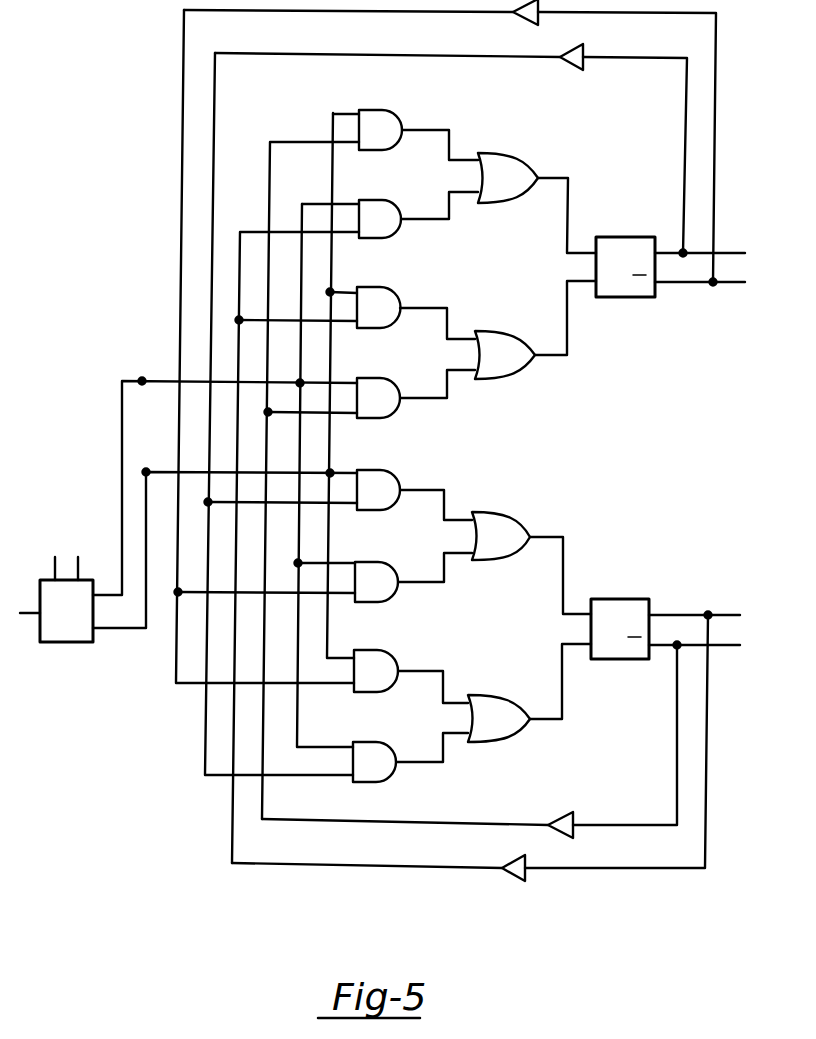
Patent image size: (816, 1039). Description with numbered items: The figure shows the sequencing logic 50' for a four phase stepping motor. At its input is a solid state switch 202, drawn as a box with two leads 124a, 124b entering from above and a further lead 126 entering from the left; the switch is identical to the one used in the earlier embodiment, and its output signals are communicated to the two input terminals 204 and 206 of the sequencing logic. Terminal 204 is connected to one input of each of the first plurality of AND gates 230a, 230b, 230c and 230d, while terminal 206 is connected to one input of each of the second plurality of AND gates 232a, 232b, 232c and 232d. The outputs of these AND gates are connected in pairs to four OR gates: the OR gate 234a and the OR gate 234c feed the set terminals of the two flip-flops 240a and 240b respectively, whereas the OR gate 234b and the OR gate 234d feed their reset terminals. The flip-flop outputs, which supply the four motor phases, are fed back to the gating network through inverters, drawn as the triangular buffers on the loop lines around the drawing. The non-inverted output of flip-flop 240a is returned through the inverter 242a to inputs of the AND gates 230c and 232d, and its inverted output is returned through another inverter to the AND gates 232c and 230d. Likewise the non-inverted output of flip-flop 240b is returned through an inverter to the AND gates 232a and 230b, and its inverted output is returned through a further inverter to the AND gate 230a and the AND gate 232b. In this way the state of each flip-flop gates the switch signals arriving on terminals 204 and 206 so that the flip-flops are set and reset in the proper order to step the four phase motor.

The sequencing logic 50' is at (425, 440).
The solid state switch 202 is at (82, 629).
The input line 124a is at (53, 563).
The input line 124b is at (77, 561).
The input line 126 is at (33, 618).
The input terminal 204 is at (147, 471).
The input terminal 206 is at (146, 380).
The AND gate 230a is at (385, 110).
The AND gate 232a is at (395, 186).
The OR gate 234a is at (528, 162).
The flip-flop 240a is at (615, 237).
The inverter 242a is at (575, 70).
The AND gate 230b is at (372, 287).
The AND gate 232b is at (393, 366).
The OR gate 234b is at (507, 331).
The AND gate 230c is at (372, 470).
The AND gate 232c is at (392, 550).
The OR gate 234c is at (515, 497).
The flip-flop 240b is at (615, 599).
The AND gate 230d is at (372, 650).
The AND gate 232d is at (396, 730).
The OR gate 234d is at (498, 695).